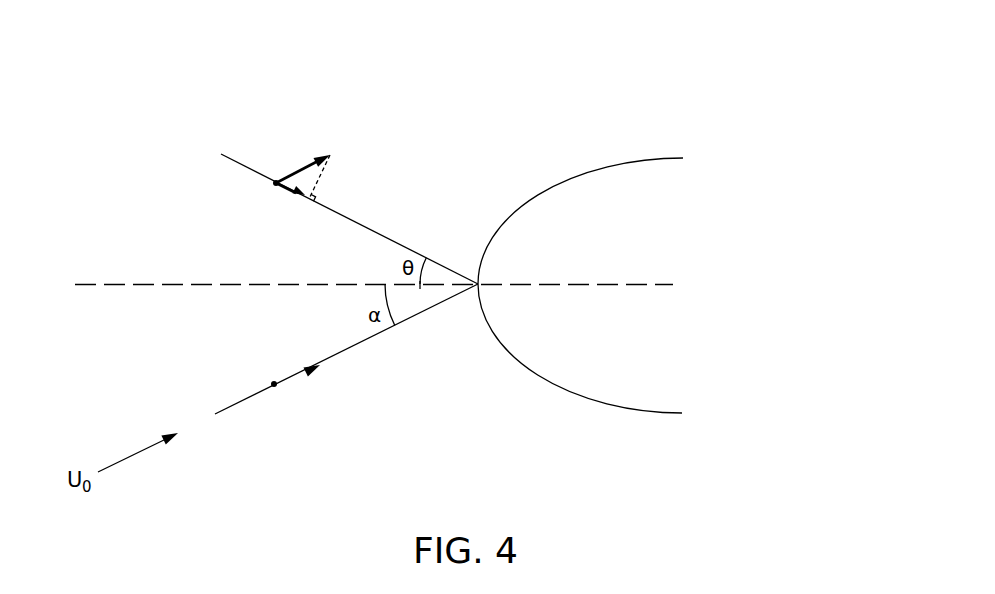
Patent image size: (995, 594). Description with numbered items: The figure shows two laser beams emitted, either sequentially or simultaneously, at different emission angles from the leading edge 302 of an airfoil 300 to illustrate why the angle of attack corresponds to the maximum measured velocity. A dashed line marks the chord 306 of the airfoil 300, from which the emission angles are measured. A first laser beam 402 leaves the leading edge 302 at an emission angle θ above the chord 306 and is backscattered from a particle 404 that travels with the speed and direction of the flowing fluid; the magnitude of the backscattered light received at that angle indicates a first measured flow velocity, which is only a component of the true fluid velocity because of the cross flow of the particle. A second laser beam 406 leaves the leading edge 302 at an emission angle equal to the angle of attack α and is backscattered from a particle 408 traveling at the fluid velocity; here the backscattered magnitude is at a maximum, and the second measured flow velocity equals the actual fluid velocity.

The airfoil 300 is at (591, 229).
The leading edge 302 is at (510, 213).
The chord 306 is at (582, 285).
The first laser beam 402 is at (380, 235).
The particle 404 is at (270, 183).
The second laser beam 406 is at (437, 307).
The particle 408 is at (274, 387).